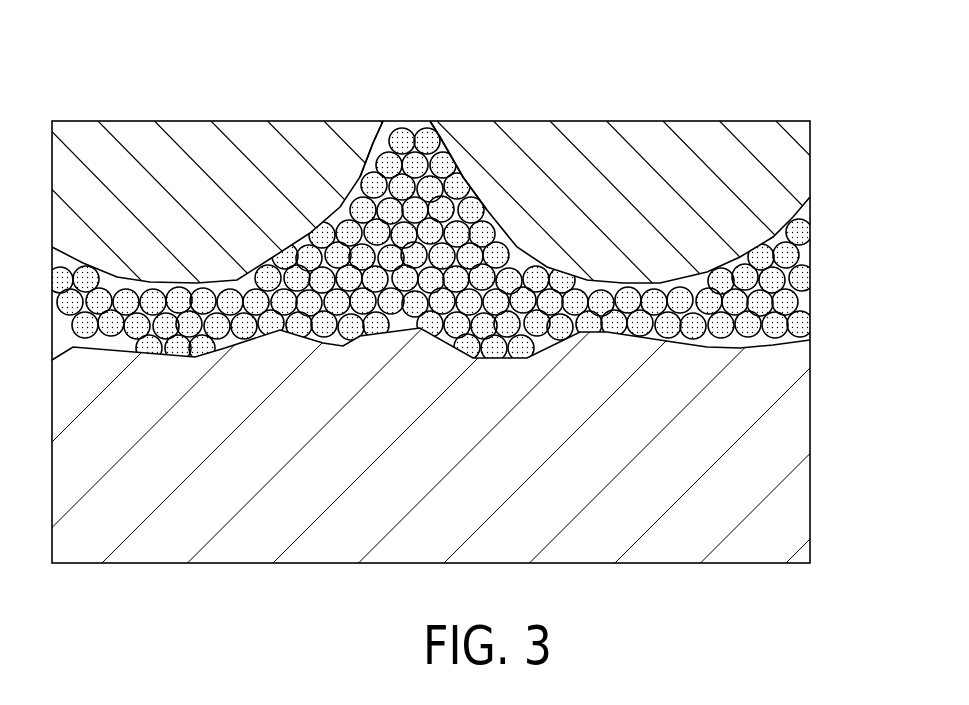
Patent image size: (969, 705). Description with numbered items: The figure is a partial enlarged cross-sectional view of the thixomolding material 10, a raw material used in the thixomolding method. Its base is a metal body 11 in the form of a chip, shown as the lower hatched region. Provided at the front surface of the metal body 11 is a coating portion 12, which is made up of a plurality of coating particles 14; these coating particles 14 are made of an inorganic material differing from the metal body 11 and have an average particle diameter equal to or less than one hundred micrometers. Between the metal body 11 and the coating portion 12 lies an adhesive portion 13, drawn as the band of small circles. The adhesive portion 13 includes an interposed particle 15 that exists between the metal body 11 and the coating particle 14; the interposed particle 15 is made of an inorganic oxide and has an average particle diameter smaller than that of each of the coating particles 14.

The thixomolding material 10 is at (800, 119).
The metal body 11 is at (795, 441).
The coating portion 12 is at (812, 121).
The adhesive portion 13 is at (812, 338).
The coating particles 14 is at (195, 147).
The interposed particle 15 is at (423, 138).